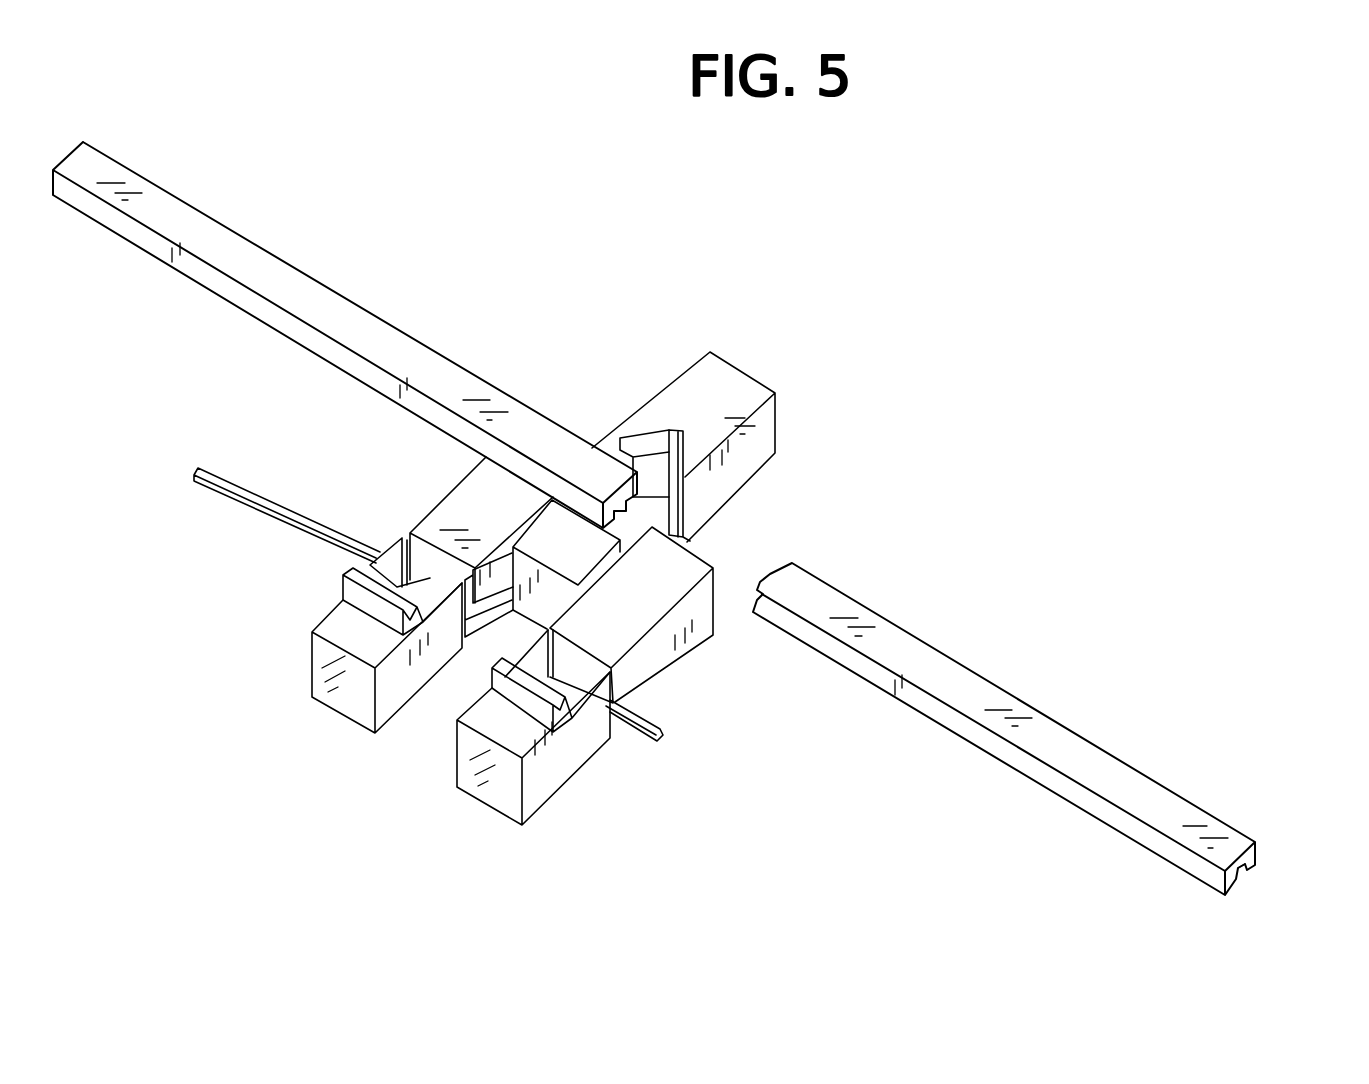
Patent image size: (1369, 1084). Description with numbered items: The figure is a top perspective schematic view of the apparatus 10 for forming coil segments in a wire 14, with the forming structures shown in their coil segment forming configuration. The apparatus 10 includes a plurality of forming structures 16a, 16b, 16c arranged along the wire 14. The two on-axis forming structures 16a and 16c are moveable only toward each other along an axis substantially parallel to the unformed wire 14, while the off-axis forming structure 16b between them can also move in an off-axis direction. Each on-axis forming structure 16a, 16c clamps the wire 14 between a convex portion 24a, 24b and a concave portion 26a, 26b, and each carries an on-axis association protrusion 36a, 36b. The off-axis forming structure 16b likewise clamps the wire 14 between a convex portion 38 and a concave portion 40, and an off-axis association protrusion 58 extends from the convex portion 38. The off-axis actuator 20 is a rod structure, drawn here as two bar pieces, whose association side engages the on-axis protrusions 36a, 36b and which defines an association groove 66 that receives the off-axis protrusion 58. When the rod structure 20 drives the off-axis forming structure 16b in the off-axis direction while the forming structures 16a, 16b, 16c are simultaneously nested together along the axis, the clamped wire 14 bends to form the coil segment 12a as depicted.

The apparatus 10 is at (896, 334).
The coil segment 12a is at (676, 432).
The wire 14 is at (653, 748).
The on-axis forming structure 16a is at (383, 580).
The off-axis forming structure 16b is at (662, 418).
The on-axis forming structure 16c is at (588, 685).
The off-axis actuator 20 is at (297, 293).
The convex portion 24a is at (480, 513).
The convex portion 24b is at (662, 604).
The concave portion 26a is at (327, 623).
The concave portion 26b is at (498, 720).
The on-axis association protrusion 36a is at (343, 597).
The on-axis association protrusion 36b is at (565, 712).
The convex portion 38 is at (555, 553).
The concave portion 40 is at (733, 403).
The off-axis association protrusion 58 is at (685, 538).
The association groove 66 is at (688, 512).